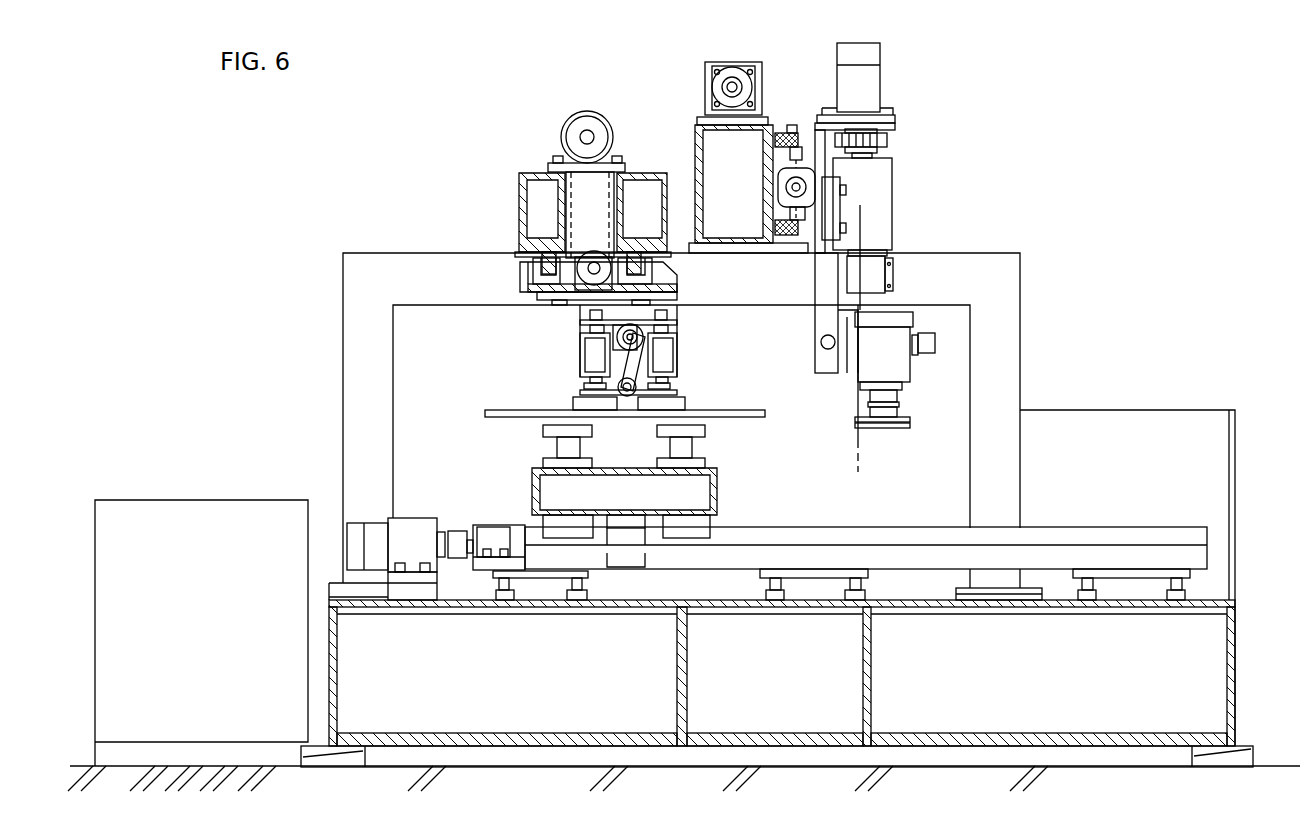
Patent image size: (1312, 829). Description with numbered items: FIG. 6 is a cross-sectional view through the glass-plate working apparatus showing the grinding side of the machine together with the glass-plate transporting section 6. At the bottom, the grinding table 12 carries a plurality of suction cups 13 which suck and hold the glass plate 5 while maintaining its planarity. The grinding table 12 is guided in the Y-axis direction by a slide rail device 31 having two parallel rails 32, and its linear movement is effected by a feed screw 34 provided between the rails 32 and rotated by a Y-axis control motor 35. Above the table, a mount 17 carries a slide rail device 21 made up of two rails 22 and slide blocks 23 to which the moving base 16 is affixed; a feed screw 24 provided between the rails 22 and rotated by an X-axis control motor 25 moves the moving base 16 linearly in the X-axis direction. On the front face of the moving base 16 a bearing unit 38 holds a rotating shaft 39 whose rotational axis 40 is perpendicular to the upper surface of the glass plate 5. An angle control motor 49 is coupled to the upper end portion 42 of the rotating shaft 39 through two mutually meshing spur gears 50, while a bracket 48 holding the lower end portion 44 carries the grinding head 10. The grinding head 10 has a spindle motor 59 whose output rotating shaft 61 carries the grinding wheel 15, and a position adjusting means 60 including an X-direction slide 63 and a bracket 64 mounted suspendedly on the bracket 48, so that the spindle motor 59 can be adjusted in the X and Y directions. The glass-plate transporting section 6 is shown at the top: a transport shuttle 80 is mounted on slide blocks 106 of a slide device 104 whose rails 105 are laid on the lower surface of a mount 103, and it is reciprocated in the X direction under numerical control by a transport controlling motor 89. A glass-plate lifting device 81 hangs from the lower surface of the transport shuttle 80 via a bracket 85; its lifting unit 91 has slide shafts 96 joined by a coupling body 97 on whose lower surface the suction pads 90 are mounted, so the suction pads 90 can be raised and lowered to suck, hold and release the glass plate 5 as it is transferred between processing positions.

The glass plate 5 is at (730, 413).
The glass-plate transporting section 6 is at (537, 173).
The grinding head 10 is at (825, 370).
The grinding table 12 is at (718, 490).
The suction cups 13 is at (563, 445).
The grinding wheel 15 is at (905, 424).
The moving base 16 is at (817, 222).
The mount 17 is at (697, 142).
The slide rail device 21 is at (787, 195).
The rails 22 is at (790, 137).
The slide blocks 23 is at (807, 133).
The feed screw 24 is at (780, 187).
The X-axis control motor 25 is at (715, 73).
The slide rail device 31 is at (755, 560).
The rails 32 is at (825, 537).
The feed screw 34 is at (523, 535).
The Y-axis control motor 35 is at (402, 530).
The bearing unit 38 is at (893, 202).
The rotating shaft 39 is at (870, 158).
The rotational axis 40 is at (873, 452).
The upper end portion 42 is at (878, 150).
The lower end portion 44 is at (875, 253).
The bracket 48 is at (870, 276).
The angle control motor 49 is at (865, 78).
The spur gears 50 is at (888, 139).
The spindle motor 59 is at (902, 365).
The position adjusting means 60 is at (915, 352).
The output rotating shaft 61 is at (890, 403).
The X-direction slide 63 is at (850, 367).
The bracket 64 is at (822, 322).
The transport shuttle 80 is at (580, 273).
The glass-plate lifting device 81 is at (624, 357).
The bracket 85 is at (587, 330).
The transport controlling motor 89 is at (588, 122).
The suction pads 90 is at (583, 403).
The lifting unit 91 is at (677, 322).
The slide shaft 96 is at (667, 328).
The coupling body 97 is at (675, 393).
The mount 103 is at (647, 148).
The slide device 104 is at (552, 272).
The rails 105 is at (535, 262).
The slide blocks 106 is at (522, 277).